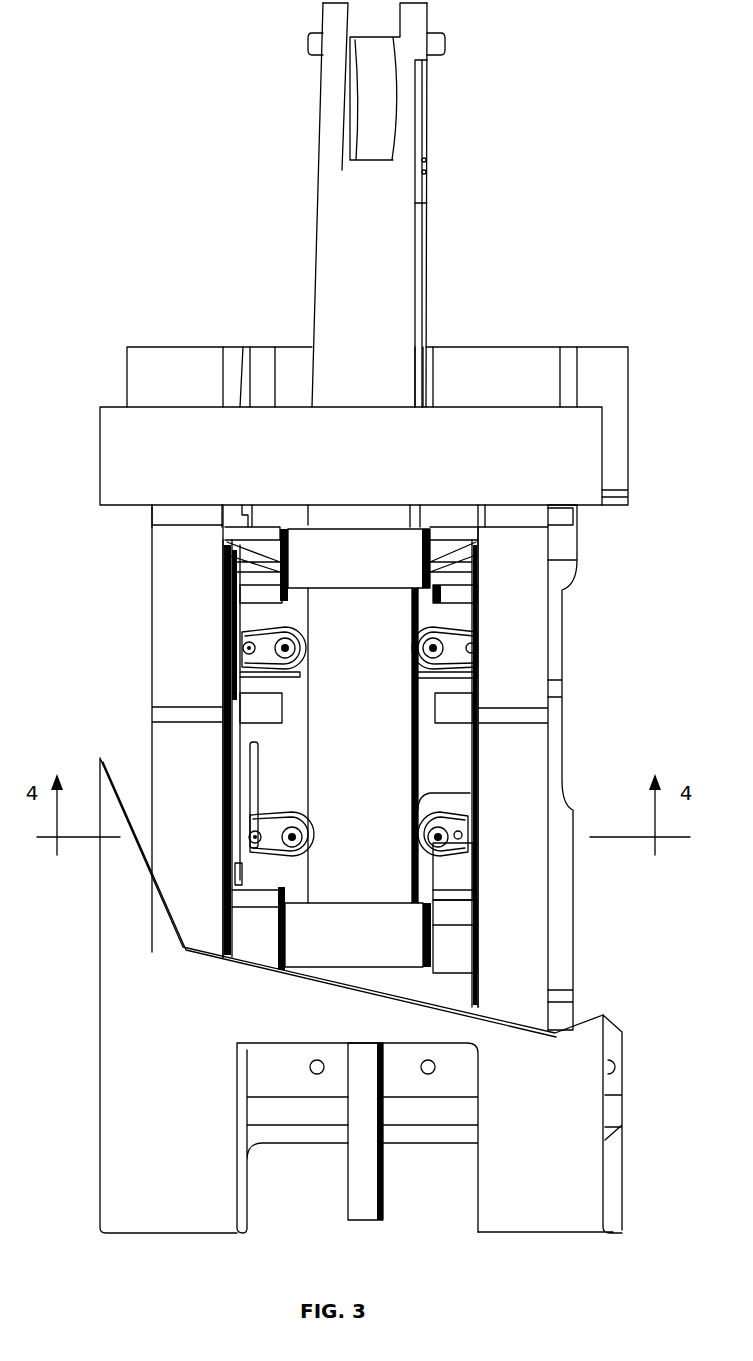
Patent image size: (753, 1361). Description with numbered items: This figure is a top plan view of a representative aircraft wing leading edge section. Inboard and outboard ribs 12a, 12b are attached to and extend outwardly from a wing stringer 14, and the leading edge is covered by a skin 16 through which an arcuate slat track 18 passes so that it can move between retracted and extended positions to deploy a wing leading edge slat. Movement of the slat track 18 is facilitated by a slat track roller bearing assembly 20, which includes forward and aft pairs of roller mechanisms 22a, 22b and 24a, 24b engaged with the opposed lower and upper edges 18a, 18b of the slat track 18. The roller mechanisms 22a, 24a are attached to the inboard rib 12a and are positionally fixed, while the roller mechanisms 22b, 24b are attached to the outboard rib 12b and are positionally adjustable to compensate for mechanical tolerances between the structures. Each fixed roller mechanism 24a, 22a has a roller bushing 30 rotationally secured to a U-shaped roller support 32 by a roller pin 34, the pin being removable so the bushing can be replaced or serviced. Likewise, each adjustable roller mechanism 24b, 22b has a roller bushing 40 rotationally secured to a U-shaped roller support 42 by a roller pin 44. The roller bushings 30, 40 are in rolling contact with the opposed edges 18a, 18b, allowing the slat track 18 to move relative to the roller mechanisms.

The inboard rib 12a is at (495, 629).
The outboard rib 12b is at (168, 597).
The wing stringer 14 is at (178, 452).
The skin 16 is at (145, 1030).
The slat track 18 is at (348, 292).
The lower edge of slat track 18a is at (313, 203).
The upper edge of slat track 18b is at (427, 222).
The slat track roller bearing assembly 20 is at (446, 804).
The forward fixed roller mechanism 22a is at (433, 793).
The forward adjustable roller mechanism 22b is at (288, 812).
The aft fixed roller mechanism 24a is at (426, 671).
The aft adjustable roller mechanism 24b is at (286, 623).
The roller bushing 30 is at (413, 650).
The U-shaped roller support 32 is at (452, 652).
The roller pin 34 is at (418, 628).
The roller bushing 40 is at (302, 676).
The U-shaped roller support 42 is at (268, 656).
The roller pin 44 is at (300, 588).